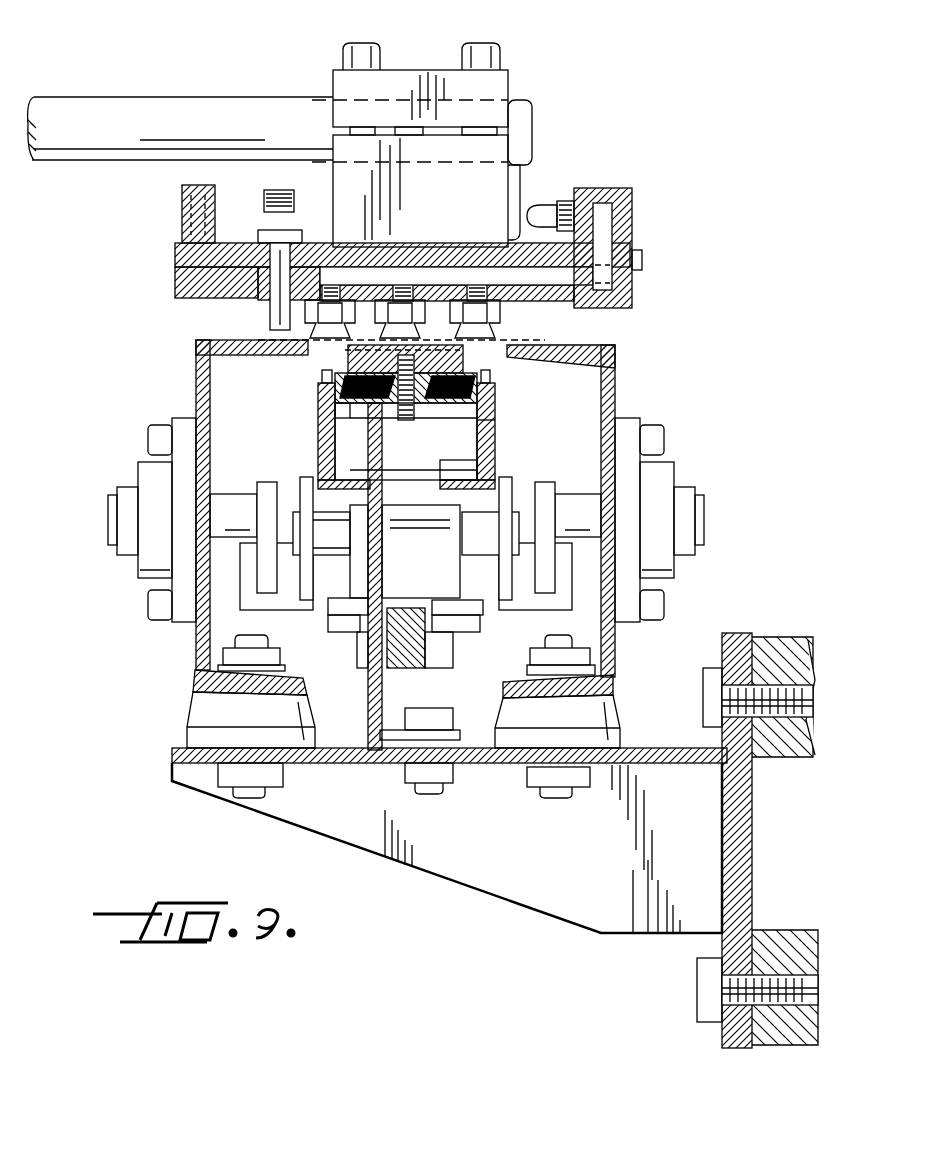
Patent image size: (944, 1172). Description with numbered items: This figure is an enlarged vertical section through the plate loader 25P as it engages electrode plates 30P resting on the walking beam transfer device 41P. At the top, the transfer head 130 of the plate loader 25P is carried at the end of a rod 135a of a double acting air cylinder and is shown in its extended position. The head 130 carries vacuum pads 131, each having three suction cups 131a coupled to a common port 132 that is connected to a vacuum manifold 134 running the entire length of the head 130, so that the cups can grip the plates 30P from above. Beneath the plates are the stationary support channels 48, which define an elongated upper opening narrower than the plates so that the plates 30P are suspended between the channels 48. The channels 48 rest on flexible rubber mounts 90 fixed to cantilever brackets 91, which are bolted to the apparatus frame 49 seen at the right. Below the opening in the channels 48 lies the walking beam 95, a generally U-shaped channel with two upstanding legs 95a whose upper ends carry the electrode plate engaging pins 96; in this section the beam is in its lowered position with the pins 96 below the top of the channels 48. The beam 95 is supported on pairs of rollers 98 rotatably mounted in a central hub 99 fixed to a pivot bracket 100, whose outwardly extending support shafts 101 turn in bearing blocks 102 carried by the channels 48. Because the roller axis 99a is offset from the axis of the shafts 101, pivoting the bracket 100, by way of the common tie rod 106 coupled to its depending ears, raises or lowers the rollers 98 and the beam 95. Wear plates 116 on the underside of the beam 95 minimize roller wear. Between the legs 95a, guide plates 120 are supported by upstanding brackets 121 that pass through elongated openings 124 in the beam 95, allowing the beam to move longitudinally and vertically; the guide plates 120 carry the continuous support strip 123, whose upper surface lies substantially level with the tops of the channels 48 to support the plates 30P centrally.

The rod 135a is at (155, 97).
The plate loader 25P is at (558, 67).
The transfer head 130 is at (600, 196).
The vacuum manifold 134 is at (606, 247).
The common port 132 is at (440, 270).
The vacuum pad 131 is at (495, 312).
The suction cups 131a is at (488, 348).
The electrode plates 30P is at (265, 338).
The walking beam transfer device 41P is at (137, 407).
The stationary support channels 48 is at (615, 398).
The continuous support strip 123 is at (352, 352).
The electrode plate engaging pins 96 is at (338, 380).
The walking beam 95 is at (318, 418).
The guide plates 120 is at (313, 434).
The upstanding brackets 121 is at (384, 447).
The elongated openings 124 is at (445, 475).
The upstanding legs 95a is at (494, 420).
The rollers 98 is at (330, 510).
The support shafts 101 is at (233, 497).
The bearing blocks 102 is at (145, 563).
The wear plates 116 is at (350, 483).
The roller axis 99a is at (347, 533).
The central hub 99 is at (332, 598).
The pivot bracket 100 is at (483, 624).
The tie rod 106 is at (407, 666).
The flexible rubber mounts 90 is at (192, 708).
The cantilever brackets 91 is at (397, 843).
The frame 49 is at (754, 852).